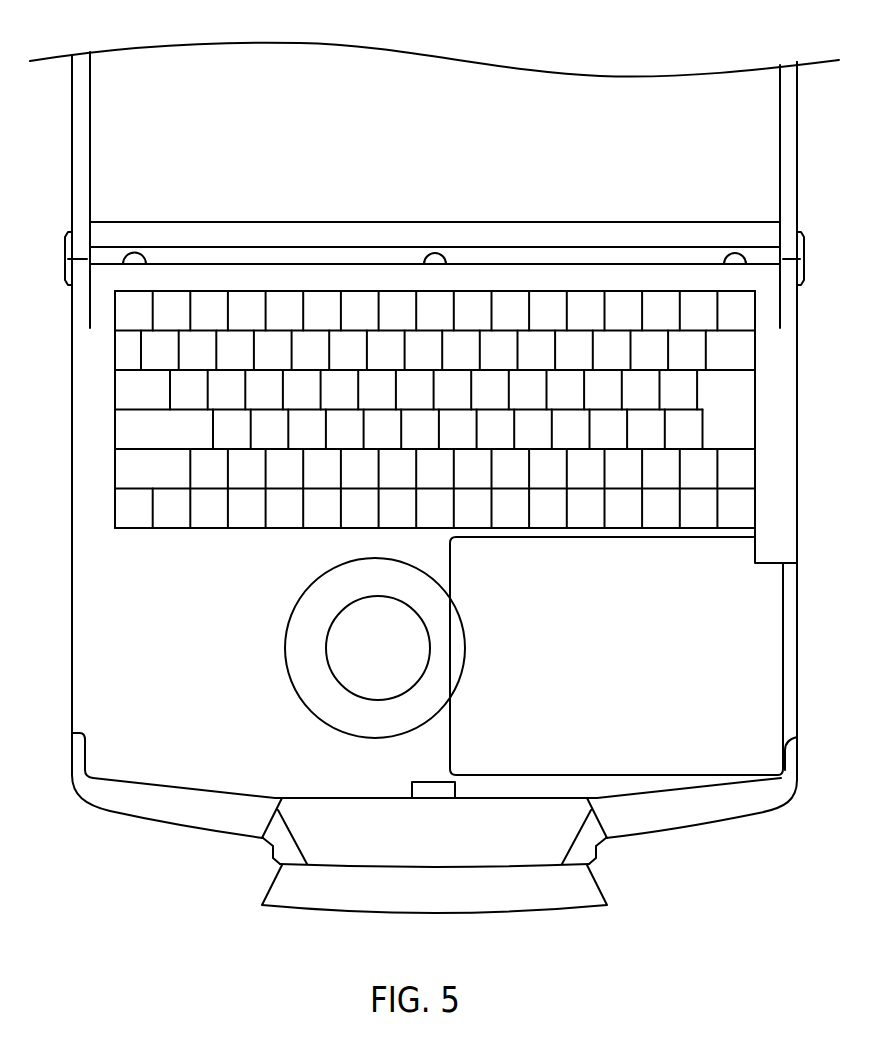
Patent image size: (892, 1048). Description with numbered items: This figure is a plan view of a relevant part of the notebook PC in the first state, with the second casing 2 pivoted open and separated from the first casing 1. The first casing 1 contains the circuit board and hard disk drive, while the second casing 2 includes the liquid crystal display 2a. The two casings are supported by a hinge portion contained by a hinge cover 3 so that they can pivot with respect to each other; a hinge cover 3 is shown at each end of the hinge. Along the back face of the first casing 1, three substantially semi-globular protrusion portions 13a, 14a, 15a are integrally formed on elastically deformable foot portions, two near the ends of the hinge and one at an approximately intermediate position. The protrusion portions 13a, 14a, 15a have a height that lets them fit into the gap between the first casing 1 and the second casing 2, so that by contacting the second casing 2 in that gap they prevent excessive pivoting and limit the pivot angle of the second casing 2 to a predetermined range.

The first casing 1 is at (787, 682).
The second casing 2 is at (787, 128).
The liquid crystal display 2a is at (712, 85).
The hinge cover 3 is at (65, 275).
The protrusion portion 13a is at (133, 253).
The protrusion portion 14a is at (438, 252).
The protrusion portion 15a is at (739, 253).